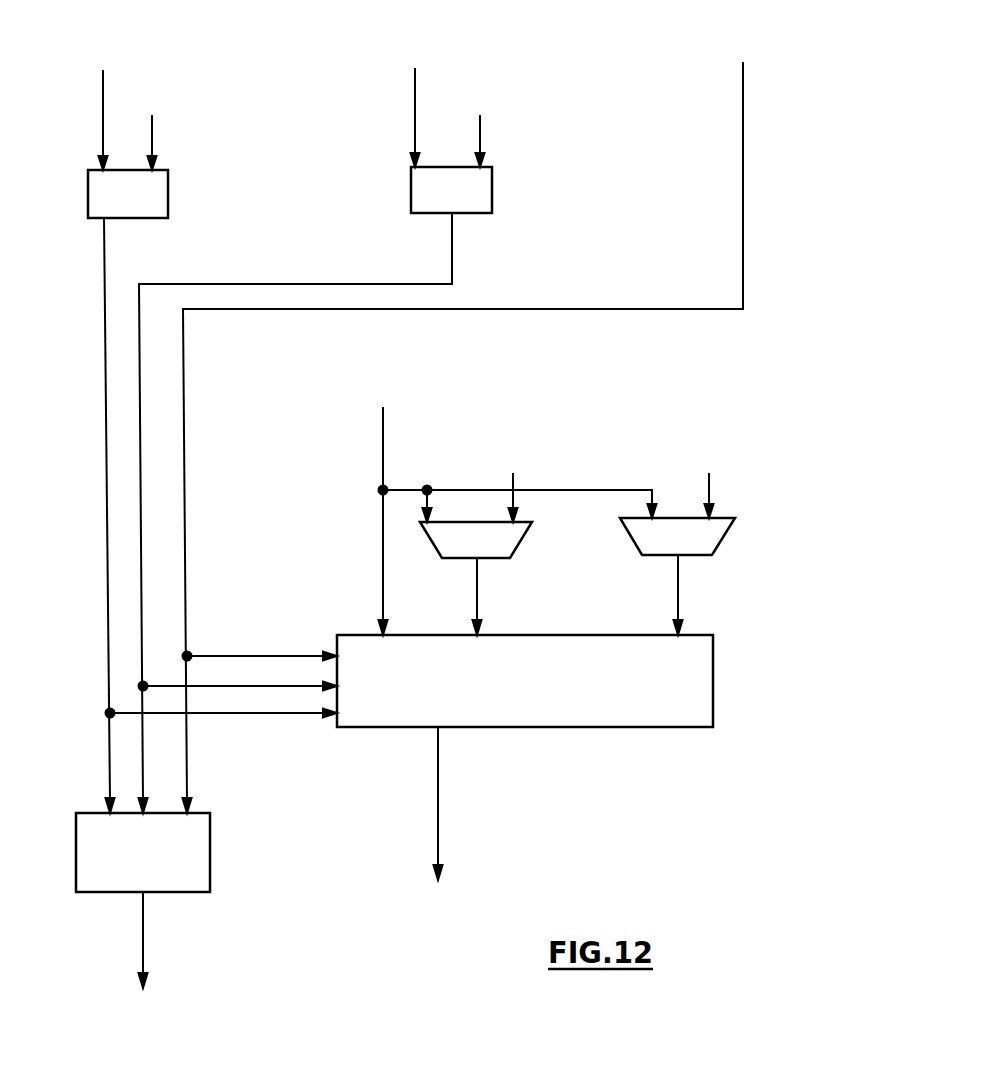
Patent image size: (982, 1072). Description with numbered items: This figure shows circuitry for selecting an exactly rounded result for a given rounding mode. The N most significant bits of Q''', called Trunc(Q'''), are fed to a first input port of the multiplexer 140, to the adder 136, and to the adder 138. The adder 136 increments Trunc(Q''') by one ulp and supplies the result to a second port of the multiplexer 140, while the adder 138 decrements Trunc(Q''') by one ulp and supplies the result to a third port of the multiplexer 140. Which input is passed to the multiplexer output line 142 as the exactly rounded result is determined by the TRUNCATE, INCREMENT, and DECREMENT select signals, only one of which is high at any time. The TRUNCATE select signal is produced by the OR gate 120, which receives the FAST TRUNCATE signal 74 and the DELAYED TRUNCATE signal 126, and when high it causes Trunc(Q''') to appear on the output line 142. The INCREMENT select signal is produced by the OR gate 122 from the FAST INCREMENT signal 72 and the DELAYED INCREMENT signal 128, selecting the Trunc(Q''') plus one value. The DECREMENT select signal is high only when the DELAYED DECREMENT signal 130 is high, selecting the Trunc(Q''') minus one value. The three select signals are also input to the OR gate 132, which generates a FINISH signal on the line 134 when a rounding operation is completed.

The fast truncate signal 74 is at (103, 139).
The delayed truncate signal 126 is at (152, 143).
The OR gate 120 is at (168, 206).
The fast increment signal 72 is at (415, 140).
The delayed increment signal 128 is at (480, 140).
The OR gate 122 is at (492, 201).
The delayed decrement signal 130 is at (743, 106).
The adder 136 is at (492, 558).
The adder 138 is at (692, 555).
The multiplexer 140 is at (620, 728).
The output line 142 is at (438, 797).
The OR gate 132 is at (210, 873).
The line 134 is at (143, 945).